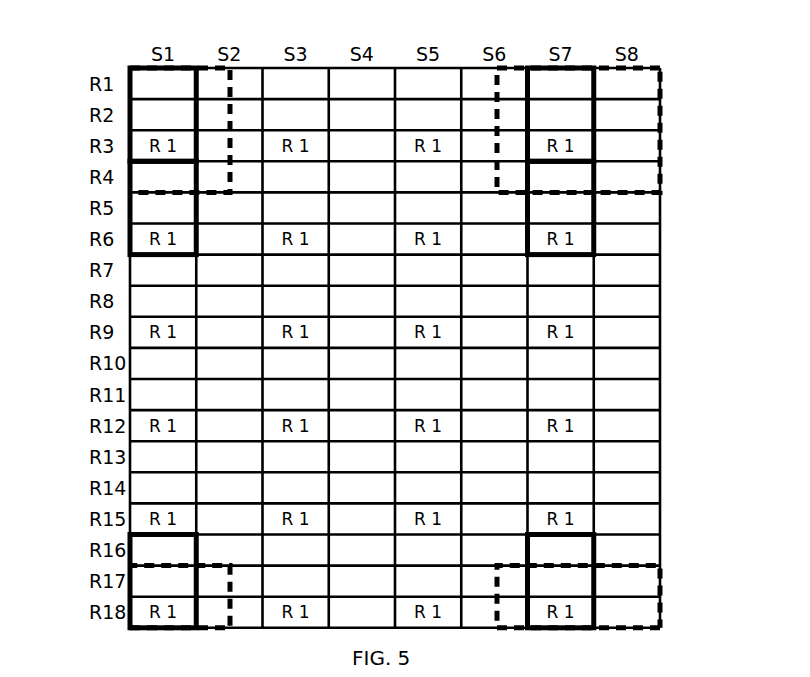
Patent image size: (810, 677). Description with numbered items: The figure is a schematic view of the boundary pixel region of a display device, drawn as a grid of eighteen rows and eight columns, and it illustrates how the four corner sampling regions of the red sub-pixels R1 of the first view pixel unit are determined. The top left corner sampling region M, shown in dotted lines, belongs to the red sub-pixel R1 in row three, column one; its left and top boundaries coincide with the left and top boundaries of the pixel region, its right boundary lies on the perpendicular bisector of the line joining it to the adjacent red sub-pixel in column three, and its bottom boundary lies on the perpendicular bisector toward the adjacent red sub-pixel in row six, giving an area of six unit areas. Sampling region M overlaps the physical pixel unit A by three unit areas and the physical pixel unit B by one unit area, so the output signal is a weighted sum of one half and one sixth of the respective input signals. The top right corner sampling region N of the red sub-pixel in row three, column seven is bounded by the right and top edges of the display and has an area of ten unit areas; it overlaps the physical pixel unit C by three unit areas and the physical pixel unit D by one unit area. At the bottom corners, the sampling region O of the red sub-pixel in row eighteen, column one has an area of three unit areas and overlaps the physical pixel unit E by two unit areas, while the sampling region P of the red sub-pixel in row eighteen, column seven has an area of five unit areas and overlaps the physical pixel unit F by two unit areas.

The physical pixel unit A is at (198, 82).
The physical pixel unit B is at (130, 213).
The physical pixel unit C is at (594, 143).
The physical pixel unit D is at (594, 240).
The physical pixel unit E is at (155, 535).
The physical pixel unit F is at (594, 608).
The top left corner sampling region M is at (230, 147).
The top right corner sampling region N is at (498, 124).
The sampling region O is at (160, 567).
The sampling region P is at (615, 565).